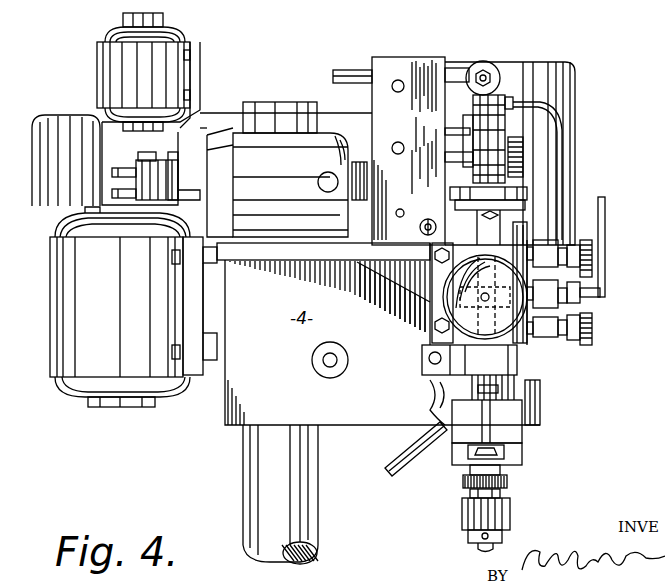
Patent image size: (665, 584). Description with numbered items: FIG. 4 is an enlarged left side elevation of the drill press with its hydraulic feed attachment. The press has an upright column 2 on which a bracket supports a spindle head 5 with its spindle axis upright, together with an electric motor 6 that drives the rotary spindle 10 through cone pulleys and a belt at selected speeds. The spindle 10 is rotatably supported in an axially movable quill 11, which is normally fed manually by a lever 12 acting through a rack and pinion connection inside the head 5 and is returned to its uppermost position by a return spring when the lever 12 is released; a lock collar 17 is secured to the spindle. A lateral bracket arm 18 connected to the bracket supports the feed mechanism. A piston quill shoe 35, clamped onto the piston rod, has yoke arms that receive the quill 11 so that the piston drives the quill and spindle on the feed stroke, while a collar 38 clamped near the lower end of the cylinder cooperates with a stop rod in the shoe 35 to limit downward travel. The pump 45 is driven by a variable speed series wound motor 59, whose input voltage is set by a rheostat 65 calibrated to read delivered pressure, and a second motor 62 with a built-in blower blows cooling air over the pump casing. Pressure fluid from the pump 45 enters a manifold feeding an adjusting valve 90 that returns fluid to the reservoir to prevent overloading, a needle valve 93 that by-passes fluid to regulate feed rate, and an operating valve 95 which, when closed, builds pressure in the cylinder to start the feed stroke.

The upright column 2 is at (243, 478).
The spindle head 5 is at (550, 413).
The electric motor 6 is at (62, 385).
The rotary spindle 10 is at (505, 494).
The quill 11 is at (507, 472).
The lever 12 is at (385, 470).
The lock collar 17 is at (466, 485).
The lateral bracket arm 18 is at (440, 308).
The piston quill shoe 35 is at (512, 432).
The collar 38 is at (512, 400).
The pump 45 is at (124, 158).
The motor 59 is at (220, 135).
The motor 62 is at (108, 40).
The rheostat 65 is at (390, 62).
The adjusting valve 90 is at (565, 245).
The needle valve 93 is at (575, 342).
The operating valve 95 is at (588, 305).